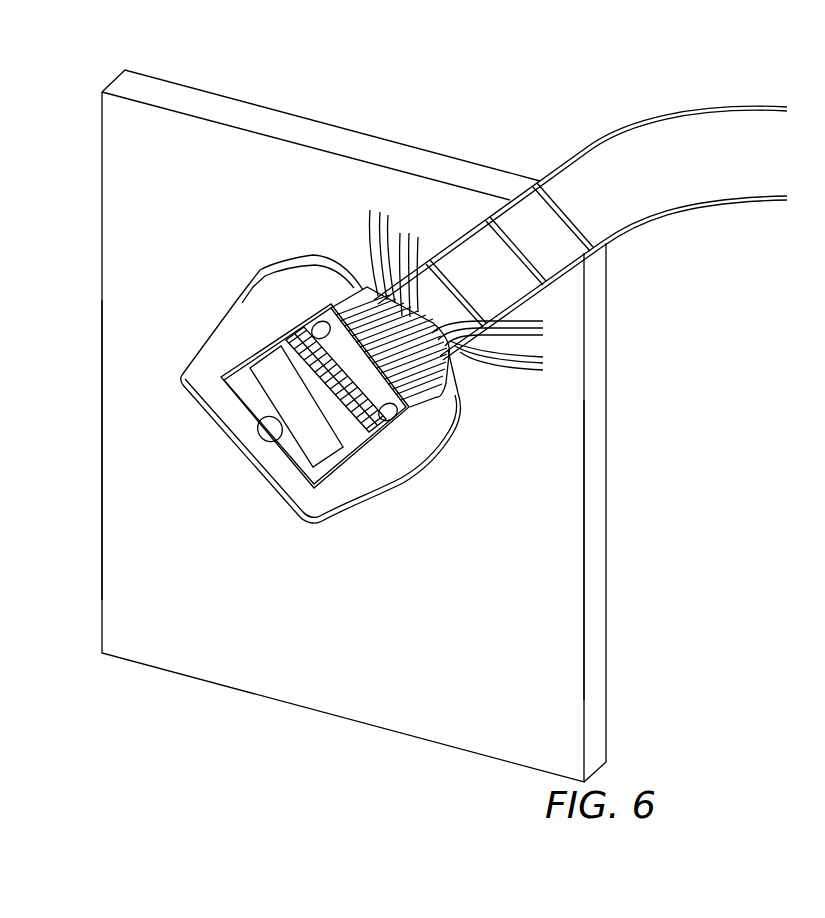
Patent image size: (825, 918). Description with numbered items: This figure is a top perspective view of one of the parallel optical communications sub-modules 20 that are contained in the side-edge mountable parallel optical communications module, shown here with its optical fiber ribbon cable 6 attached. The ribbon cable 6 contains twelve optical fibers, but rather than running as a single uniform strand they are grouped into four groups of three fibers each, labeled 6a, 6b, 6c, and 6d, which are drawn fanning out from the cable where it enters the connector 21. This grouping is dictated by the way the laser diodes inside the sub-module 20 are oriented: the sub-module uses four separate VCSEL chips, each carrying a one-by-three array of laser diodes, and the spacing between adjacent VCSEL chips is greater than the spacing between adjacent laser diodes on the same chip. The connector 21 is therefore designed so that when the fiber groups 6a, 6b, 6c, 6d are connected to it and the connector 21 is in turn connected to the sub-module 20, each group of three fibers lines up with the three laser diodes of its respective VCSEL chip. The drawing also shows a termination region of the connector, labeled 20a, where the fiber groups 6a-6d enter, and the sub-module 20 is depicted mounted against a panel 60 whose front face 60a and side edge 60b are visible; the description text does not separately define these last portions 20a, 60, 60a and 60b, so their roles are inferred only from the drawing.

The optical fiber ribbon cable 6 is at (612, 147).
The first group of optical fibers 6a is at (381, 250).
The second group of optical fibers 6b is at (409, 265).
The third group of optical fibers 6c is at (501, 330).
The fourth group of optical fibers 6d is at (512, 360).
The parallel optical communications sub-module 20 is at (255, 297).
The wire termination block 20a is at (437, 392).
The connector 21 is at (318, 300).
The panel 60 is at (303, 133).
The panel front edge 60a is at (103, 455).
The panel right edge 60b is at (583, 518).